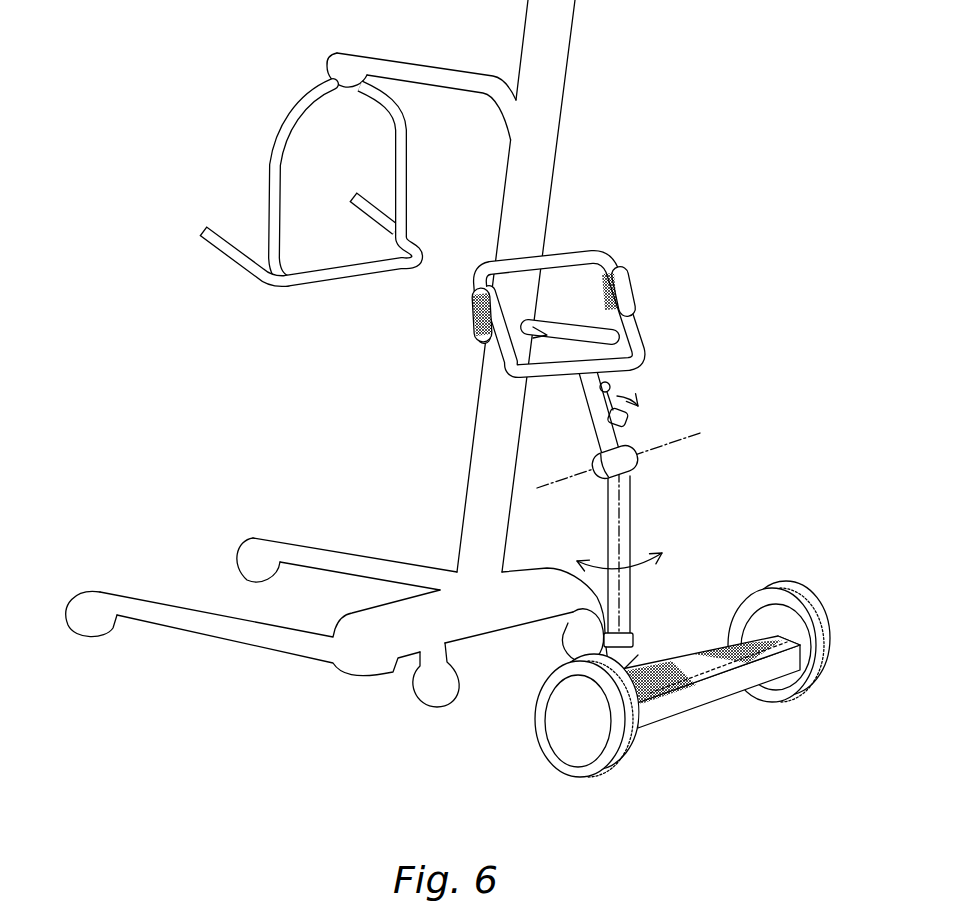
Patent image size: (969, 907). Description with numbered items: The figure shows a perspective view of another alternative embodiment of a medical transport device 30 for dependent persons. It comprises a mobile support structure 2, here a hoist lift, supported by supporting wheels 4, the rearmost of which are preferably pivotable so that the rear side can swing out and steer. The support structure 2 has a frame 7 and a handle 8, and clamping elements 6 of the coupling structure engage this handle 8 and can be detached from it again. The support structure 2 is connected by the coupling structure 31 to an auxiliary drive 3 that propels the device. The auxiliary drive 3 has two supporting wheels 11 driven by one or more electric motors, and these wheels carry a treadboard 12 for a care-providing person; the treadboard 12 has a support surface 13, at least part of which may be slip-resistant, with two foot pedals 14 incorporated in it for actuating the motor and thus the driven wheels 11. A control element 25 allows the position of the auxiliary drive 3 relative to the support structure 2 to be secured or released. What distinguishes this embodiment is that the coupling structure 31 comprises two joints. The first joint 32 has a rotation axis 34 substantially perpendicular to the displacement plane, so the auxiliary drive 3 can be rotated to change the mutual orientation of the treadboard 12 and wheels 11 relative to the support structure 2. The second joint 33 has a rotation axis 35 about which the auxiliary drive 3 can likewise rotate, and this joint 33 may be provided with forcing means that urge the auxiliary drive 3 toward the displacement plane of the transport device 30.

The mobile support structure 2 is at (244, 112).
The auxiliary drive 3 is at (689, 670).
The supporting wheels 4 is at (72, 616).
The clamping elements 6 is at (620, 293).
The frame 7 is at (550, 107).
The handle 8 is at (577, 257).
The supporting wheels 11 is at (767, 617).
The treadboard 12 is at (707, 690).
The support surface 13 is at (688, 660).
The foot pedals 14 is at (663, 693).
The control element 25 is at (614, 384).
The medical transport device 30 is at (689, 448).
The coupling structure 31 is at (623, 508).
The first joint 32 is at (633, 645).
The second joint 33 is at (640, 463).
The rotation axis 34 is at (618, 547).
The rotation axis 35 is at (702, 432).